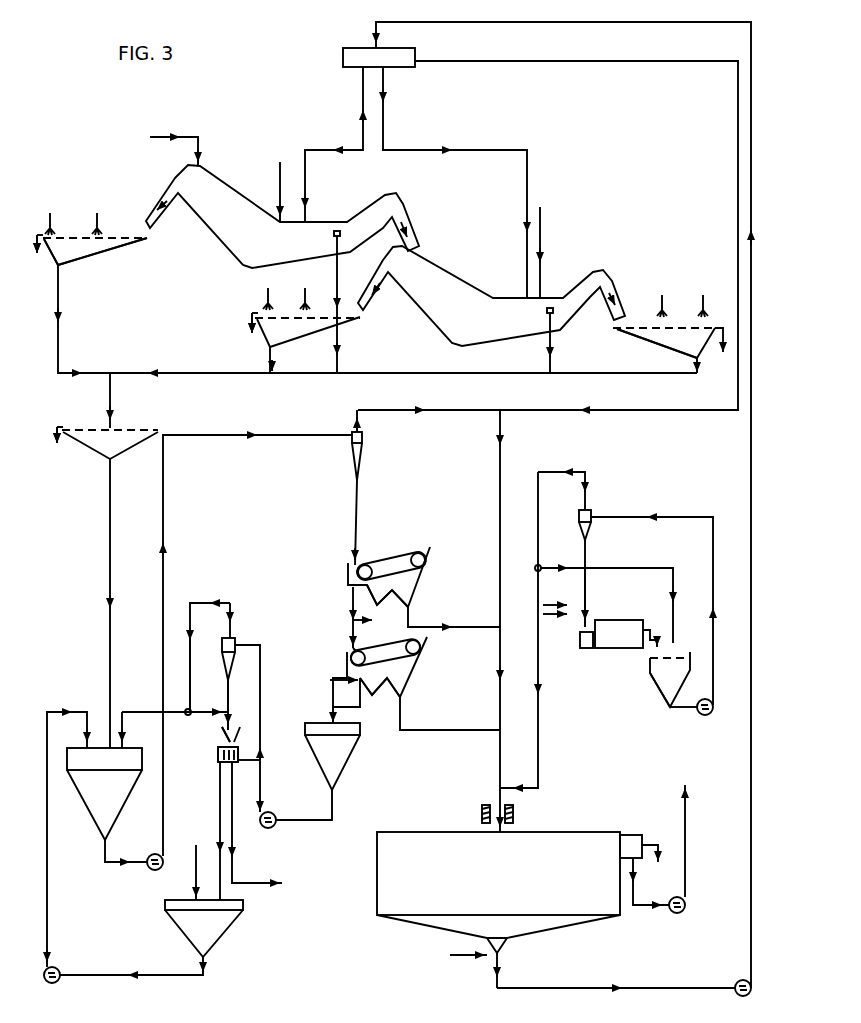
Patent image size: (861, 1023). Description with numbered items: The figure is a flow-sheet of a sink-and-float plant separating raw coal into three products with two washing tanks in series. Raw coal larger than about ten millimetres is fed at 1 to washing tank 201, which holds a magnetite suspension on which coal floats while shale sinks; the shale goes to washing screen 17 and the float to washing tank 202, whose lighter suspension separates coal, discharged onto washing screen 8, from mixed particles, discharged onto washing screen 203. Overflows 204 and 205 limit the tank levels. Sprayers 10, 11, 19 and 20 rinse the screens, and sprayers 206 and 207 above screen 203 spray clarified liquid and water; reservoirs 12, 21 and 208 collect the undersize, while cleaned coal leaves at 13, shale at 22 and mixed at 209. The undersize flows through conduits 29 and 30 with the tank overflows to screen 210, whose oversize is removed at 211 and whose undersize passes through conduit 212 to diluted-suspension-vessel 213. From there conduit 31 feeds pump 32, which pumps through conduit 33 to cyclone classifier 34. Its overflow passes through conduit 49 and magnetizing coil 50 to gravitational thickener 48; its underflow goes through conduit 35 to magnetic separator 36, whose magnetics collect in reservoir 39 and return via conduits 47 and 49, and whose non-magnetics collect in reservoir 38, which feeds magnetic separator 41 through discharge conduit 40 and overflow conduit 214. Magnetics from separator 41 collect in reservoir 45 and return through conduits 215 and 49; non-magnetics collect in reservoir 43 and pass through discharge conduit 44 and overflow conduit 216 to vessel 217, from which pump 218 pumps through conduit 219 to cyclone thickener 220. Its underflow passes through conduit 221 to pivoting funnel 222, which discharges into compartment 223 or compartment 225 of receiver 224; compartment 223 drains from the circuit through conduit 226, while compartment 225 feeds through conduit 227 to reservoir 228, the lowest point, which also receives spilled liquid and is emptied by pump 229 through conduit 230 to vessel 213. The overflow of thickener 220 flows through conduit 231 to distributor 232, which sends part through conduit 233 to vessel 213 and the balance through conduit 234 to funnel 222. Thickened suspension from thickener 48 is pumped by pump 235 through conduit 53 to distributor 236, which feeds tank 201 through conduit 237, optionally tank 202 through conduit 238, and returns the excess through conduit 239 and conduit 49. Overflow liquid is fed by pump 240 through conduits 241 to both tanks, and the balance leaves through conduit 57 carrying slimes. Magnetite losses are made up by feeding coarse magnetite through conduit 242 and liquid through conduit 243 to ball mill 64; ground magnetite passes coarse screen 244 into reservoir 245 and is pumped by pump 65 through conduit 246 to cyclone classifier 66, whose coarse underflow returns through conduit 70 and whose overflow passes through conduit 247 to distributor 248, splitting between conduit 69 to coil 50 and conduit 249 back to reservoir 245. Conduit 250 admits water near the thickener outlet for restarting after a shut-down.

The feed point 1 is at (165, 145).
The washing screen 8 is at (625, 332).
The sprayer 10 is at (664, 306).
The sprayer 11 is at (705, 306).
The reservoir 12 is at (663, 345).
The coal discharge 13 is at (715, 370).
The washing screen 17 is at (118, 245).
The sprayer 19 is at (99, 220).
The sprayer 20 is at (52, 220).
The reservoir 21 is at (90, 257).
The shale discharge 22 is at (30, 261).
The conduit 29 is at (648, 376).
The conduit 30 is at (60, 347).
The conduit 31 is at (100, 863).
The pump 32 is at (145, 868).
The conduit 33 is at (166, 545).
The cyclone classifier 34 is at (360, 460).
The conduit 35 is at (357, 508).
The magnetic separator 36 is at (392, 562).
The reservoir 38 is at (388, 607).
The reservoir 39 is at (420, 585).
The discharge conduit 40 is at (371, 637).
The magnetic separator 41 is at (385, 654).
The reservoir 43 is at (382, 697).
The discharge conduit 44 is at (358, 710).
The reservoir 45 is at (420, 680).
The conduit 47 is at (468, 628).
The gravitational thickener 48 is at (498, 892).
The conduit 49 is at (442, 411).
The magnetizing coil 50 is at (514, 813).
The conduit 53 is at (575, 987).
The conduit 57 is at (645, 870).
The ball mill 64 is at (618, 634).
The pump 65 is at (696, 724).
The cyclone classifier 66 is at (591, 527).
The conduit 69 is at (540, 708).
The conduit 70 is at (587, 603).
The washing tank 201 is at (282, 216).
The washing tank 202 is at (491, 296).
The washing screen 203 is at (340, 325).
The overflow 204 is at (333, 233).
The overflow 205 is at (546, 311).
The sprayers 206 is at (322, 285).
The sprayers 207 is at (265, 301).
The reservoir 208 is at (292, 338).
The mixed discharge 209 is at (235, 337).
The screen 210 is at (125, 428).
The oversize removal point 211 is at (42, 450).
The conduit 212 is at (108, 553).
The diluted-suspension-vessel 213 is at (104, 794).
The overflow conduit 214 is at (350, 599).
The conduit 215 is at (448, 730).
The overflow conduit 216 is at (330, 682).
The vessel 217 is at (318, 771).
The pump 218 is at (276, 814).
The conduit 219 is at (262, 712).
The thickener 220 is at (236, 641).
The conduit 221 is at (232, 708).
The pivoting funnel 222 is at (242, 733).
The compartment 223 is at (262, 762).
The receiver 224 is at (218, 750).
The compartment 225 is at (218, 760).
The conduit 226 is at (238, 883).
The conduit 227 is at (218, 826).
The reservoir 228 is at (151, 907).
The pump 229 is at (58, 970).
The conduit 230 is at (47, 935).
The conduit 231 is at (212, 602).
The distributor 232 is at (190, 709).
The conduit 233 is at (125, 710).
The conduit 234 is at (205, 714).
The pump 235 is at (735, 983).
The distributor 236 is at (343, 62).
The conduit 237 is at (363, 105).
The conduit 238 is at (383, 106).
The conduit 239 is at (530, 61).
The pump 240 is at (686, 908).
The conduits 241 is at (280, 178).
The conduit 242 is at (565, 617).
The conduit 243 is at (578, 625).
The coarse screen 244 is at (655, 670).
The reservoir 245 is at (663, 700).
The conduit 246 is at (680, 517).
The conduit 247 is at (590, 482).
The distributor 248 is at (541, 566).
The conduit 249 is at (650, 567).
The conduit 250 is at (455, 960).